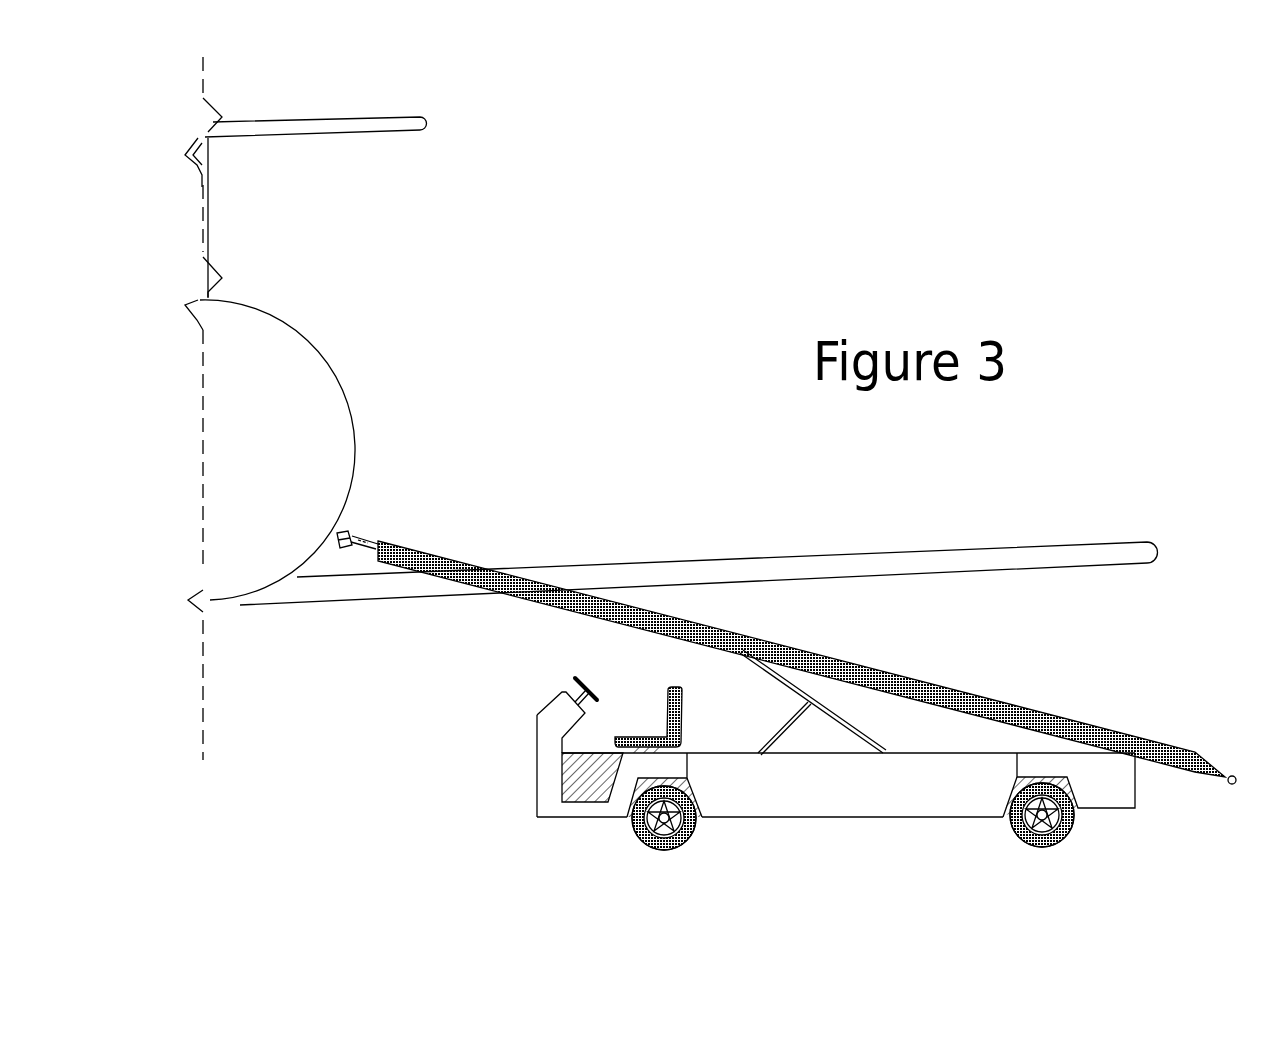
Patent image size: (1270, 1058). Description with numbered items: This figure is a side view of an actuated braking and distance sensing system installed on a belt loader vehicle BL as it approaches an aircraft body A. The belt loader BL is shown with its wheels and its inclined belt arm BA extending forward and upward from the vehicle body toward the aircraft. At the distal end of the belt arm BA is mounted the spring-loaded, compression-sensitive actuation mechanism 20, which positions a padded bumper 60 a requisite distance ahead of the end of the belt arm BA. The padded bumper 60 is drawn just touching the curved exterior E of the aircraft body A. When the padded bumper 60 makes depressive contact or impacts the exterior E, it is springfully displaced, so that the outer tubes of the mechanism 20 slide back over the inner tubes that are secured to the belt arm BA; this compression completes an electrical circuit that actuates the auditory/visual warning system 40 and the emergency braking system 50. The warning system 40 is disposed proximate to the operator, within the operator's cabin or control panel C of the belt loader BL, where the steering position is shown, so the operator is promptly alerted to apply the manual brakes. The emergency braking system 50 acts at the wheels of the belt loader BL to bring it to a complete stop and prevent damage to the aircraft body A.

The aircraft body A is at (284, 469).
The exterior of aircraft body E is at (362, 440).
The belt arm BA is at (962, 692).
The belt loader vehicle BL is at (808, 797).
The spring-loaded actuation mechanism 20 is at (362, 532).
The padded bumper 60 is at (332, 549).
The auditory/visual warning system 40 is at (572, 690).
The control panel C is at (590, 716).
The emergency braking system 50 is at (634, 824).